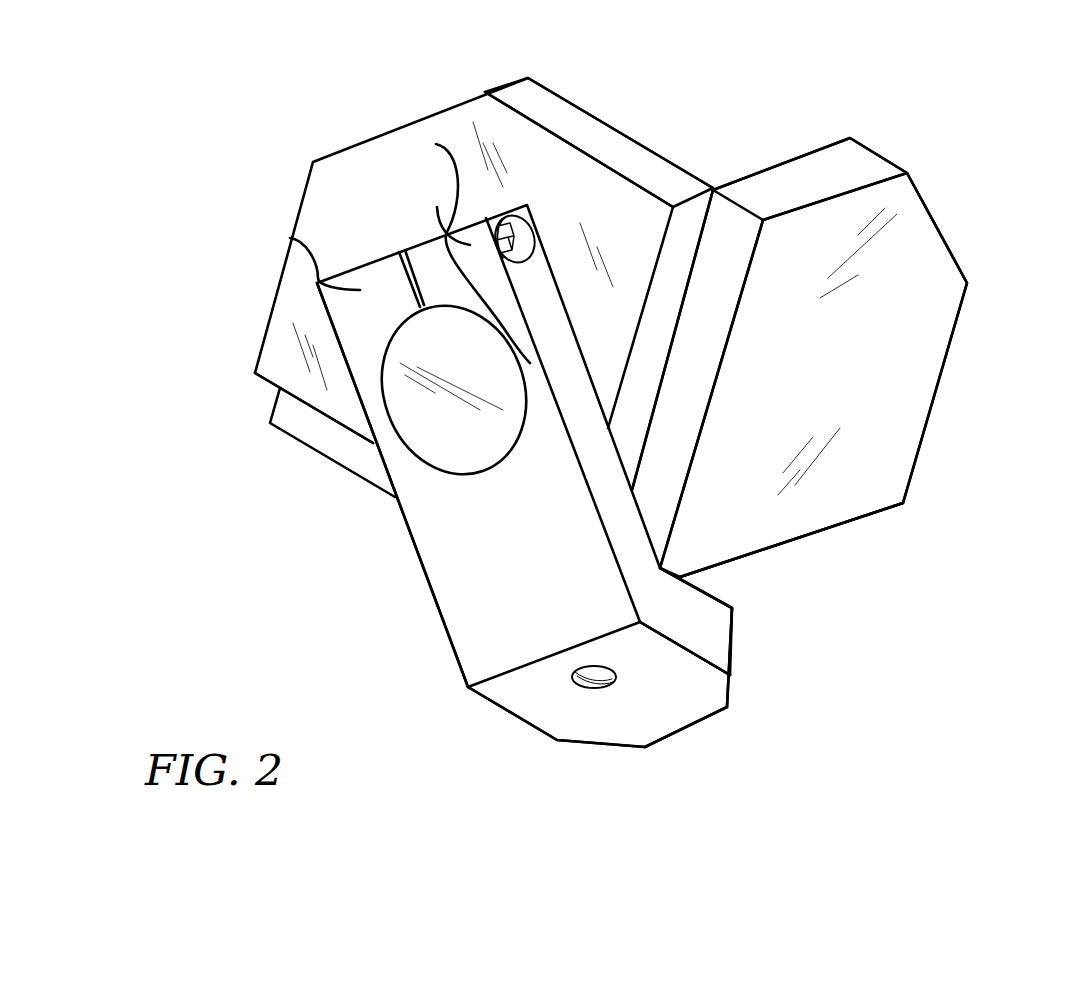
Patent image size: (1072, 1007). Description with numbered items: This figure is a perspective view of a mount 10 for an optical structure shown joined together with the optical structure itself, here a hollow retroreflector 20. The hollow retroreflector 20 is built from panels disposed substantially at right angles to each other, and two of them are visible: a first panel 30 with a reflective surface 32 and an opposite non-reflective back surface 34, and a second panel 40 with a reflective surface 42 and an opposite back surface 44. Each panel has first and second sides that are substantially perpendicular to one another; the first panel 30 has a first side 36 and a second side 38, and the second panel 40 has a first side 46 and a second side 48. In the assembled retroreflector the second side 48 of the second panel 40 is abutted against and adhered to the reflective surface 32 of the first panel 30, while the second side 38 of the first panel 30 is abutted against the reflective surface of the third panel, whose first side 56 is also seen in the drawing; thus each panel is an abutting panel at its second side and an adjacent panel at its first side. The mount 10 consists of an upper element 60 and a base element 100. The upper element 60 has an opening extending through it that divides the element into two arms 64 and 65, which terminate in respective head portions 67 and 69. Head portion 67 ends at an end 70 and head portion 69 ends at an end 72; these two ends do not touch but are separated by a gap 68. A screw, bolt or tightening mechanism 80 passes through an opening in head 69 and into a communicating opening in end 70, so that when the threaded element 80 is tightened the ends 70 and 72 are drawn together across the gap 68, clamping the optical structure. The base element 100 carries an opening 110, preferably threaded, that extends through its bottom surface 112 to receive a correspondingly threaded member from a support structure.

The mount 10 is at (698, 614).
The hollow retroreflector 20 is at (883, 157).
The first panel 30 is at (395, 128).
The reflective surface 32 is at (655, 153).
The back surface 34 is at (483, 241).
The first side 36 is at (660, 340).
The second side 38 is at (332, 422).
The second panel 40 is at (920, 357).
The reflective surface 42 is at (794, 158).
The back surface 44 is at (813, 375).
The first side 46 is at (841, 526).
The second side 48 is at (697, 379).
The first side 56 is at (332, 442).
The upper element 60 is at (457, 601).
The arm 64 is at (415, 503).
The arm 65 is at (446, 210).
The head portion 67 is at (292, 238).
The gap 68 is at (424, 314).
The head portion 69 is at (469, 244).
The end 70 is at (402, 276).
The end 72 is at (413, 269).
The screw/bolt/tightening mechanism 80 is at (521, 215).
The base element 100 is at (700, 687).
The opening 110 is at (577, 687).
The bottom surface 112 is at (597, 717).